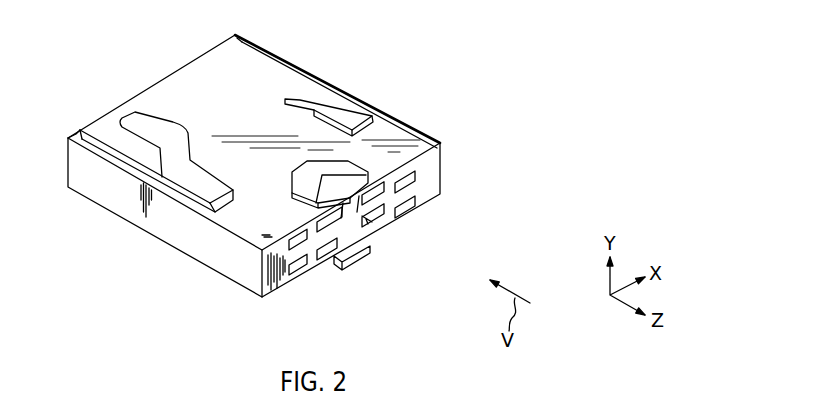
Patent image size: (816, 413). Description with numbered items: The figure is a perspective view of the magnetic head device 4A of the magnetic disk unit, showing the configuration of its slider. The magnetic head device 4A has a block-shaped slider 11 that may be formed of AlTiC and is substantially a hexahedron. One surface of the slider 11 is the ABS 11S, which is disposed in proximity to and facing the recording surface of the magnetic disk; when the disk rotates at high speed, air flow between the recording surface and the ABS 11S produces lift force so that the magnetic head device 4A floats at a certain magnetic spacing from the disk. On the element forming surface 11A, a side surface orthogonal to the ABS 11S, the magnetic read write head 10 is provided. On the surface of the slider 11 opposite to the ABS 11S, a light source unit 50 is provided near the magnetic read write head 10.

The magnetic head device 4A is at (301, 178).
The slider 11 is at (430, 169).
The ABS 11S is at (193, 185).
The element forming surface 11A is at (276, 253).
The magnetic read write head 10 is at (372, 222).
The light source unit 50 is at (357, 258).